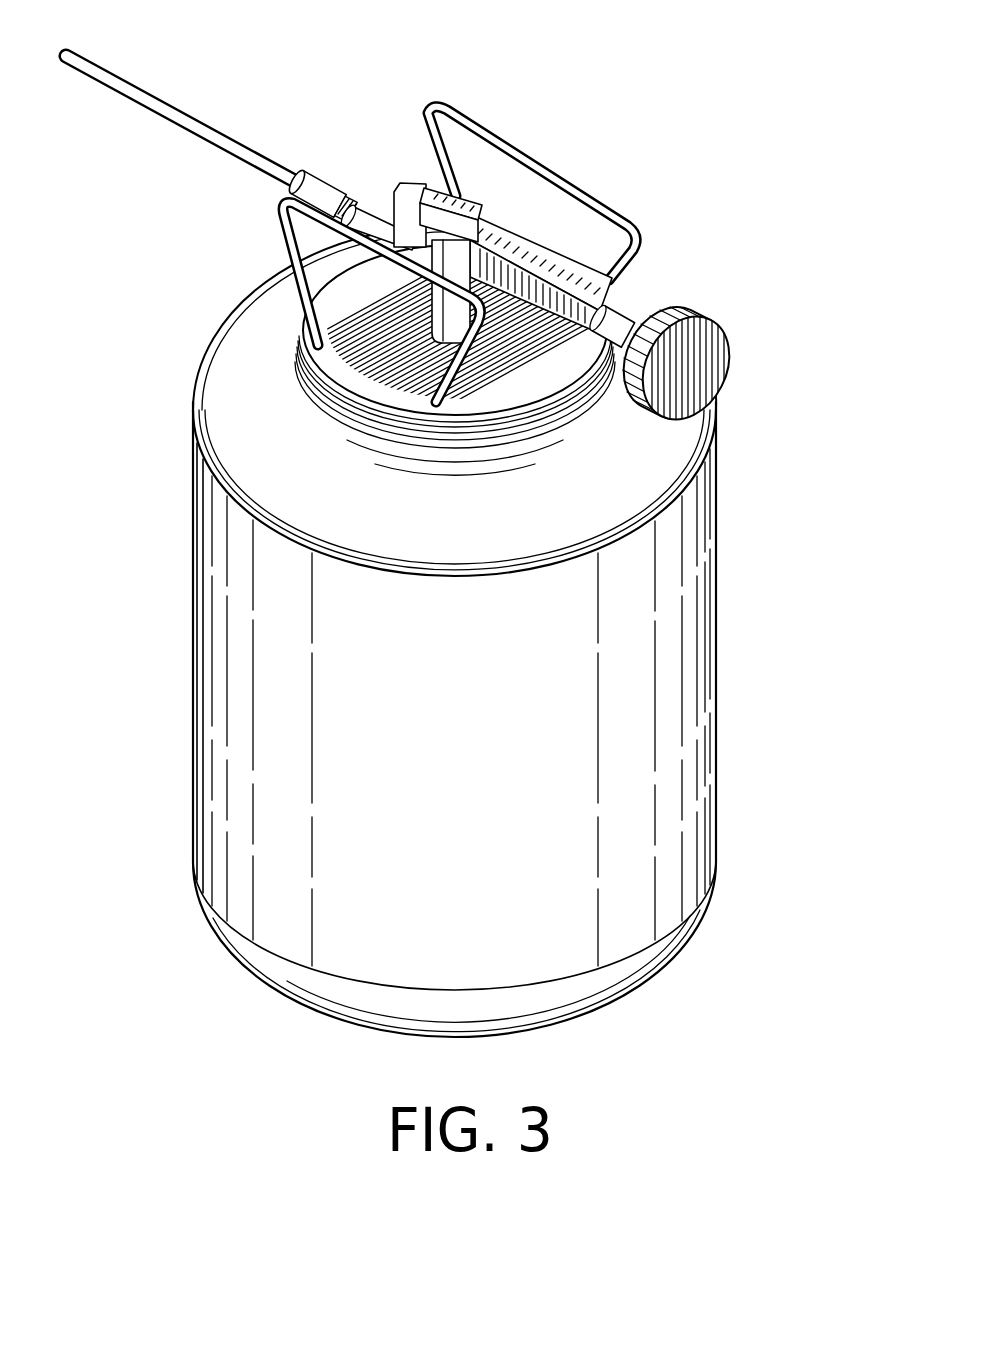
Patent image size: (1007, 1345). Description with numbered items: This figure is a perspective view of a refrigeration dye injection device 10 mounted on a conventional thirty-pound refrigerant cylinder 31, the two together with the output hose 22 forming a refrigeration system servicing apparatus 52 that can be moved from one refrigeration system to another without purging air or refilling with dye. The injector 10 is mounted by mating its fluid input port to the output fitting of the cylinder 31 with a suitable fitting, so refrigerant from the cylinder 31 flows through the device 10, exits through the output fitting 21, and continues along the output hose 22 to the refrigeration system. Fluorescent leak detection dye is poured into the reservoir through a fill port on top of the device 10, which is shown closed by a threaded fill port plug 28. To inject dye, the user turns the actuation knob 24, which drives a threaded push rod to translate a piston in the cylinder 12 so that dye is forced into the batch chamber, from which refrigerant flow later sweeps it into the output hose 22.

The injection device 10 is at (630, 106).
The cylinder 12 is at (547, 267).
The output fitting 21 is at (343, 197).
The output hose 22 is at (147, 97).
The actuation knob 24 is at (700, 365).
The threaded fill port plug 28 is at (462, 203).
The refrigerant cylinder 31 is at (673, 650).
The refrigeration system servicing apparatus 52 is at (790, 590).